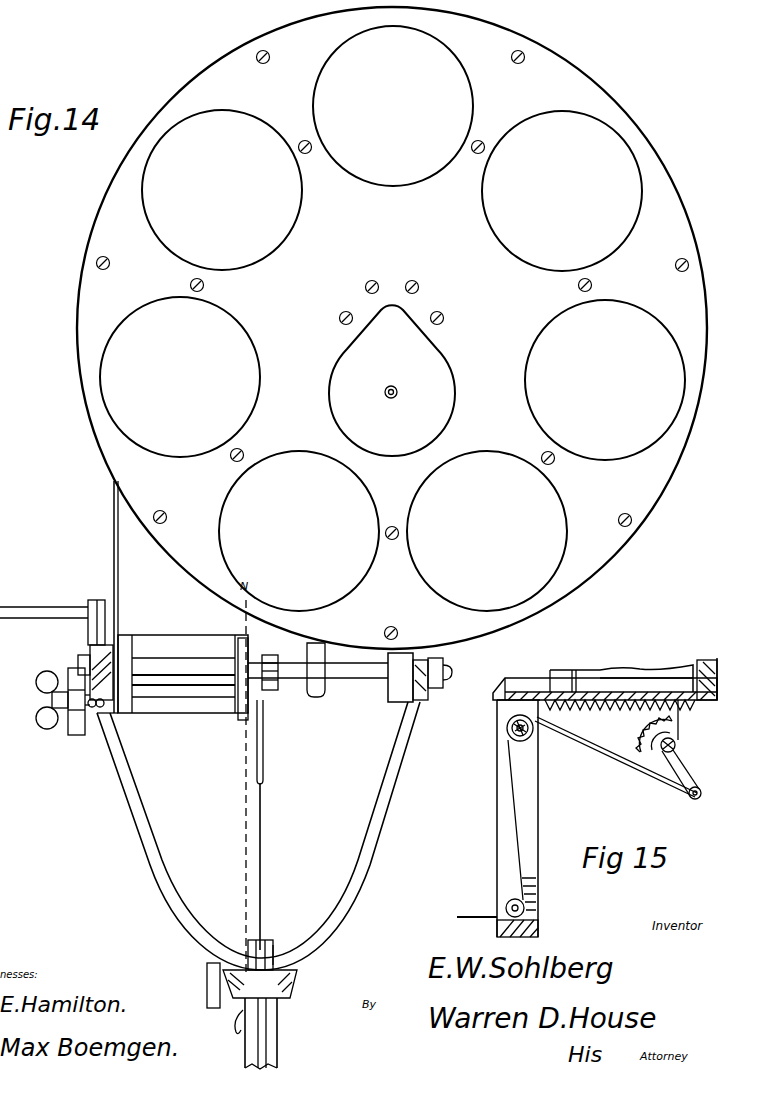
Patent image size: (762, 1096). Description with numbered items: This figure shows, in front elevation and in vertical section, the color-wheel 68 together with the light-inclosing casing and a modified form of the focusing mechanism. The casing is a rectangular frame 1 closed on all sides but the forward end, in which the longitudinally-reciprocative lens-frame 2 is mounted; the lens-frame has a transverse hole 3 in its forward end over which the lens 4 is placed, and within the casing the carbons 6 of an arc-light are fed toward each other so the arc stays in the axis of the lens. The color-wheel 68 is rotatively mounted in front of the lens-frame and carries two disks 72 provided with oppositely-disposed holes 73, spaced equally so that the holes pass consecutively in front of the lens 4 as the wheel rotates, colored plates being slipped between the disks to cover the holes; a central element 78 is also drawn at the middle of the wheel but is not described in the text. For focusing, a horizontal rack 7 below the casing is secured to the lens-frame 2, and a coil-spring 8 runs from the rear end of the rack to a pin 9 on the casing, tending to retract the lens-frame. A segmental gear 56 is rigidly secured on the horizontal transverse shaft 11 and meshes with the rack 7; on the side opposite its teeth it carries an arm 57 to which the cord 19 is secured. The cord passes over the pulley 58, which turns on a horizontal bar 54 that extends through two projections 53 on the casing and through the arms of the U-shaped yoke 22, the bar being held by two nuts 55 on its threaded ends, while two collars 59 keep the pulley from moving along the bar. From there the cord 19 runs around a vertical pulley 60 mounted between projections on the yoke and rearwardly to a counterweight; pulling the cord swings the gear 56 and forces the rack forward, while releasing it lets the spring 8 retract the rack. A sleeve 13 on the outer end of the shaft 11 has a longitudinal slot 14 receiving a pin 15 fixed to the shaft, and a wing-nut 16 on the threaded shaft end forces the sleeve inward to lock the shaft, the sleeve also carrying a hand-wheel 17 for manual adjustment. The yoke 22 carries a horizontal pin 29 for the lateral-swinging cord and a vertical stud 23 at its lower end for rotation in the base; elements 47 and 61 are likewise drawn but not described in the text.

In FIG. 15, the rectangular frame 1 is at (533, 675).
In FIG. 14, the lens-frame 2 is at (128, 597).
In FIG. 15, the lens-frame 2 is at (667, 666).
In FIG. 15, the transverse hole 3 is at (700, 664).
In FIG. 15, the lens 4 is at (716, 660).
In FIG. 14, the carbons 6 is at (316, 683).
In FIG. 15, the horizontal rack 7 is at (640, 676).
In FIG. 15, the coil-spring 8 is at (572, 676).
In FIG. 15, the pin 9 is at (560, 676).
In FIG. 14, the horizontal transverse shaft 11 is at (192, 713).
In FIG. 15, the horizontal transverse shaft 11 is at (676, 745).
In FIG. 14, the sleeve 13 is at (103, 718).
In FIG. 14, the longitudinal slot 14 is at (105, 701).
In FIG. 14, the pin 15 is at (101, 672).
In FIG. 14, the wing-nut 16 is at (44, 727).
In FIG. 14, the hand-wheel 17 is at (78, 736).
In FIG. 14, the cord 19 is at (273, 866).
In FIG. 15, the cord 19 is at (622, 756).
In FIG. 14, the U-shaped yoke 22 is at (126, 798).
In FIG. 15, the U-shaped yoke 22 is at (497, 775).
In FIG. 14, the vertical stud 23 is at (282, 1006).
In FIG. 14, the horizontal pin 29 is at (27, 605).
In FIG. 14, the stop 47 is at (199, 985).
In FIG. 14, the projections 53 is at (395, 705).
In FIG. 15, the projections 53 is at (497, 706).
In FIG. 14, the horizontal bar 54 is at (372, 680).
In FIG. 15, the horizontal bar 54 is at (534, 738).
In FIG. 14, the nuts 55 is at (445, 662).
In FIG. 15, the nuts 55 is at (575, 682).
In FIG. 14, the segmental gear 56 is at (270, 692).
In FIG. 15, the segmental gear 56 is at (636, 733).
In FIG. 14, the arm 57 is at (278, 752).
In FIG. 15, the arm 57 is at (680, 778).
In FIG. 15, the pulley 58 is at (506, 727).
In FIG. 14, the collars 59 is at (246, 655).
In FIG. 15, the collars 59 is at (508, 738).
In FIG. 14, the vertical pulley 60 is at (250, 955).
In FIG. 15, the vertical pulley 60 is at (510, 895).
In FIG. 14, the clip 61 is at (276, 945).
In FIG. 14, the color-wheel 68 is at (372, 328).
In FIG. 14, the disks 72 is at (392, 454).
In FIG. 14, the holes 73 is at (392, 148).
In FIG. 14, the center hole 78 is at (398, 392).